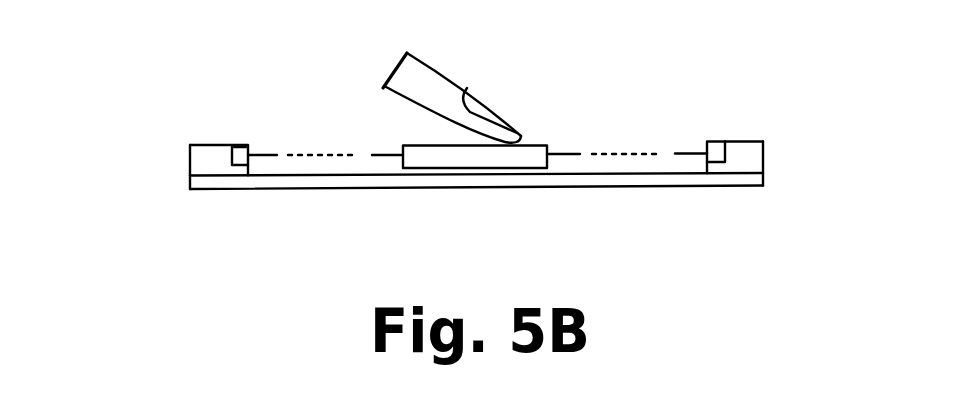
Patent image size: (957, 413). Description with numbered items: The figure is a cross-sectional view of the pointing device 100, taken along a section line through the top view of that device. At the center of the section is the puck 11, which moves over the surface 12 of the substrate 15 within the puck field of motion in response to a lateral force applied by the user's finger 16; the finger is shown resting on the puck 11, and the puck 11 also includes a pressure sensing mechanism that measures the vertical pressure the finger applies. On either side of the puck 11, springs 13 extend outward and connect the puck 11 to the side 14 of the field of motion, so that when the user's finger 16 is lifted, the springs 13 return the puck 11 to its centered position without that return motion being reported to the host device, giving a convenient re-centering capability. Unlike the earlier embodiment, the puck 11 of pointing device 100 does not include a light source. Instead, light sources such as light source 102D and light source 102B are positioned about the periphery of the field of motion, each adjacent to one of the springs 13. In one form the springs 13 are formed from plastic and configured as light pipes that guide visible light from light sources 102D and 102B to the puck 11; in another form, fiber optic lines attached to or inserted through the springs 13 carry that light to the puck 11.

The pointing device 100 is at (150, 98).
The light source 102D is at (240, 152).
The light source 102B is at (712, 150).
The puck 11 is at (467, 158).
The surface 12 is at (332, 175).
The springs 13 is at (560, 150).
The side of the puck field of motion 14 is at (745, 145).
The substrate 15 is at (493, 188).
The user's finger 16 is at (440, 77).